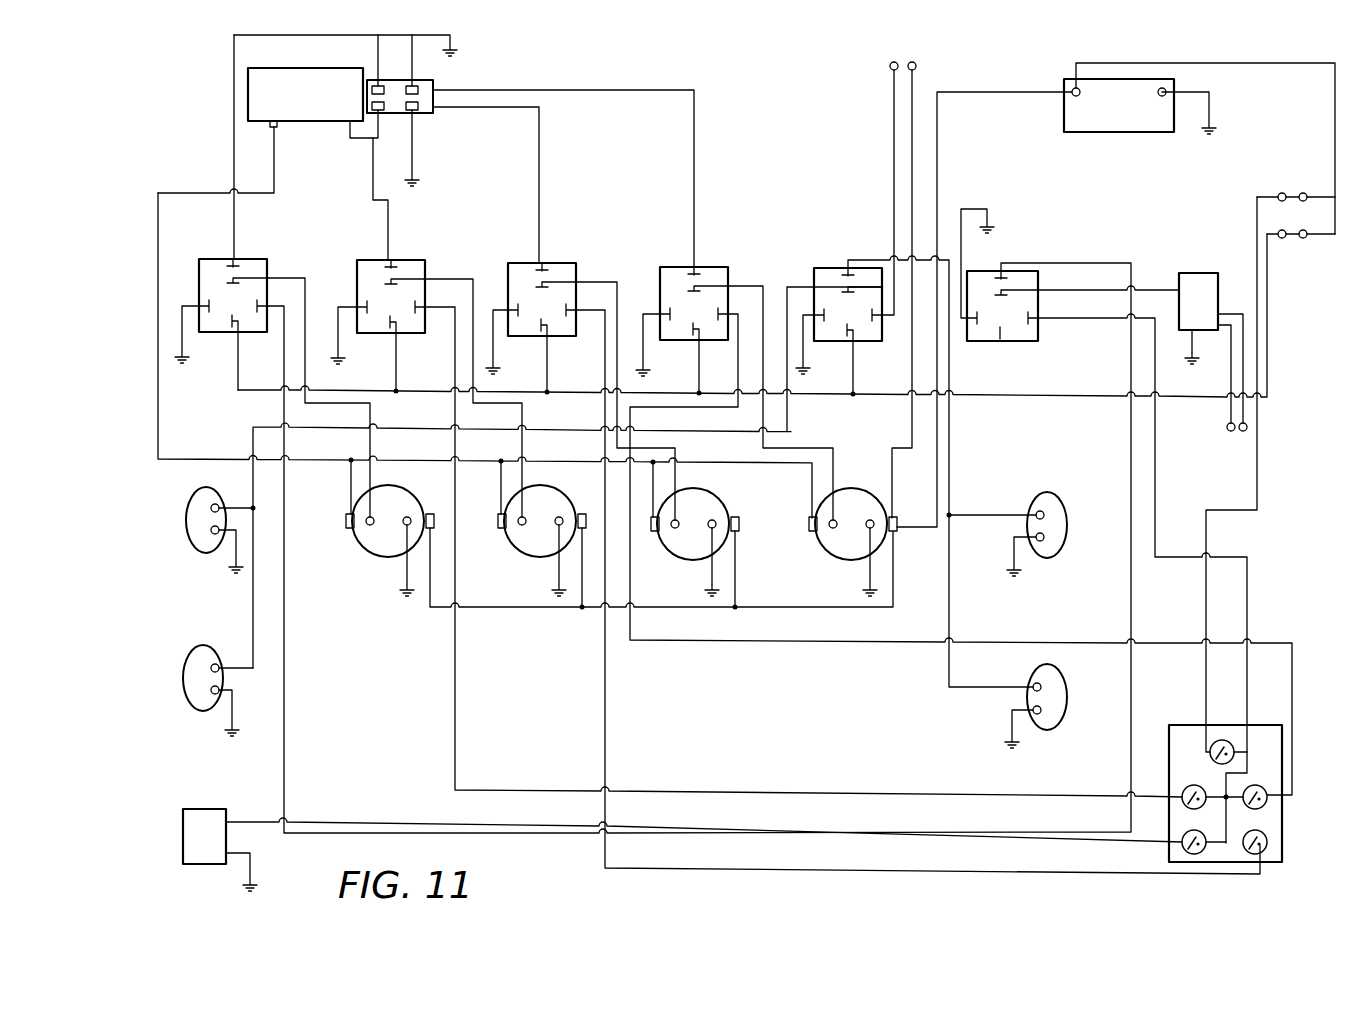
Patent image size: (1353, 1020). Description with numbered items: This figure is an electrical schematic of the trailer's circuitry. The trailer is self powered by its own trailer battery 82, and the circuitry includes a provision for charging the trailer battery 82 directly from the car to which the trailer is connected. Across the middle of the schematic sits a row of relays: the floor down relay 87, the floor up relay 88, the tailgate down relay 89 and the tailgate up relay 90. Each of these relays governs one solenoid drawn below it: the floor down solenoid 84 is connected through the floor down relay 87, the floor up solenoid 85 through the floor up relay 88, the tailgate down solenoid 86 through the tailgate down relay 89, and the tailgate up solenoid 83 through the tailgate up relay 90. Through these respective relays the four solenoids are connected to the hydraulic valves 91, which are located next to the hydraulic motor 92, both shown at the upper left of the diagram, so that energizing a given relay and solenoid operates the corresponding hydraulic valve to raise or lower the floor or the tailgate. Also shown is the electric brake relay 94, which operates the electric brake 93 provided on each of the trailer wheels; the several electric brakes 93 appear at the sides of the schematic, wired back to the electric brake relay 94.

The trailer battery 82 is at (1125, 132).
The tailgate up solenoid 83 is at (826, 549).
The floor down solenoid 84 is at (364, 548).
The floor up solenoid 85 is at (515, 548).
The tailgate down solenoid 86 is at (668, 549).
The floor down relay 87 is at (258, 259).
The floor up relay 88 is at (420, 260).
The tailgate down relay 89 is at (568, 263).
The tailgate up relay 90 is at (718, 267).
The hydraulic valves 91 is at (440, 82).
The hydraulic motor 92 is at (262, 91).
The electric brake 93 is at (186, 533).
The electric brake relay 94 is at (827, 268).